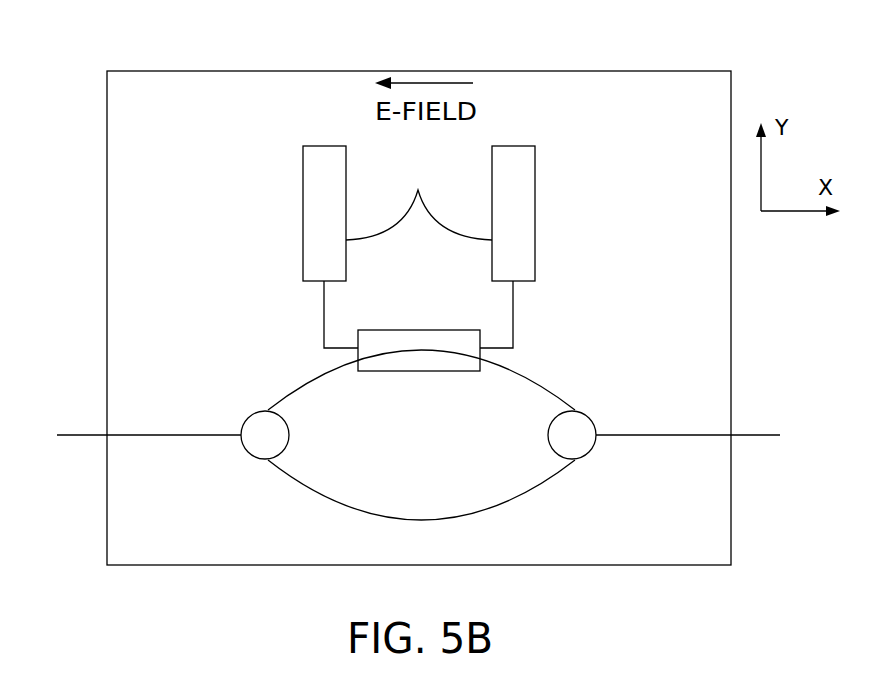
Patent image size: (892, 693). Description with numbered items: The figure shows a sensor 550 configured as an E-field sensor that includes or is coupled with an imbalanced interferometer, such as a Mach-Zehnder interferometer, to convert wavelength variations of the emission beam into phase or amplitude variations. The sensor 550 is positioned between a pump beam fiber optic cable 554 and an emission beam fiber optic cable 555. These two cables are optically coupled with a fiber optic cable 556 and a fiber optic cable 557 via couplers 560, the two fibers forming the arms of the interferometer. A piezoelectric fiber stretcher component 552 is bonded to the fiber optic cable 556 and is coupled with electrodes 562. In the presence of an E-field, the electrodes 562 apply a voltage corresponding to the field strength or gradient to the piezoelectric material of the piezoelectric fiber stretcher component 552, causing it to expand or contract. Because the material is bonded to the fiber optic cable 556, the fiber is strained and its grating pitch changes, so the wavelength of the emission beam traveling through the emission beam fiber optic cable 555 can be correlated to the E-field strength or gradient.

The sensor 550 is at (662, 71).
The piezoelectric fiber stretcher component 552 is at (408, 330).
The pump beam fiber optic cable 554 is at (72, 433).
The emission beam fiber optic cable 555 is at (755, 434).
The fiber optic cable 556 is at (307, 378).
The fiber optic cable 557 is at (542, 485).
The couplers 560 is at (250, 413).
The electrodes 562 is at (419, 213).